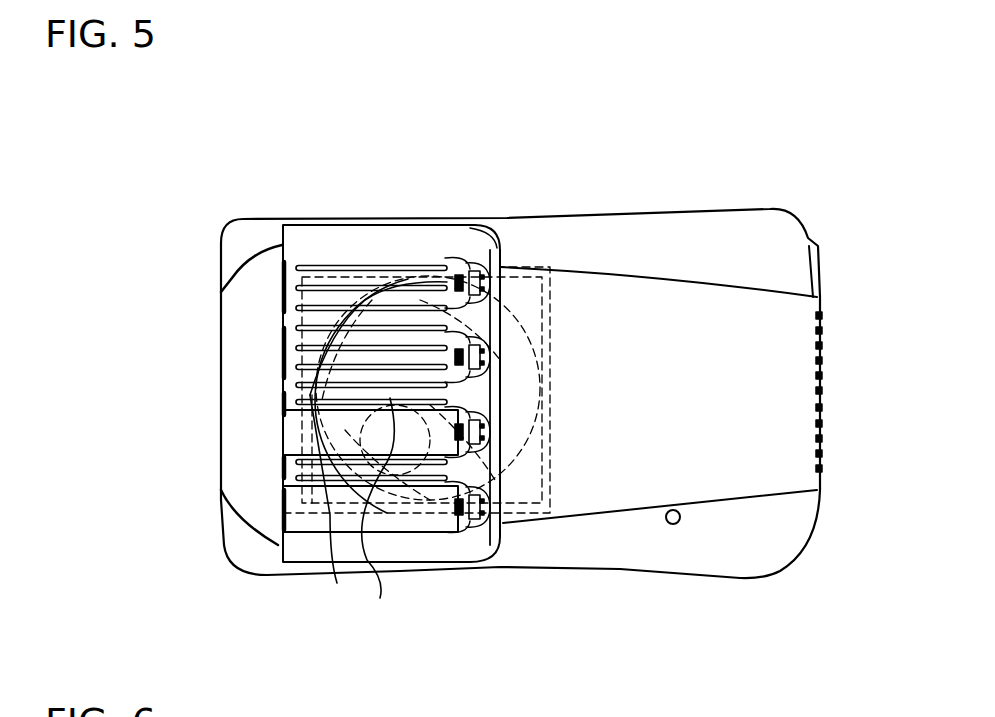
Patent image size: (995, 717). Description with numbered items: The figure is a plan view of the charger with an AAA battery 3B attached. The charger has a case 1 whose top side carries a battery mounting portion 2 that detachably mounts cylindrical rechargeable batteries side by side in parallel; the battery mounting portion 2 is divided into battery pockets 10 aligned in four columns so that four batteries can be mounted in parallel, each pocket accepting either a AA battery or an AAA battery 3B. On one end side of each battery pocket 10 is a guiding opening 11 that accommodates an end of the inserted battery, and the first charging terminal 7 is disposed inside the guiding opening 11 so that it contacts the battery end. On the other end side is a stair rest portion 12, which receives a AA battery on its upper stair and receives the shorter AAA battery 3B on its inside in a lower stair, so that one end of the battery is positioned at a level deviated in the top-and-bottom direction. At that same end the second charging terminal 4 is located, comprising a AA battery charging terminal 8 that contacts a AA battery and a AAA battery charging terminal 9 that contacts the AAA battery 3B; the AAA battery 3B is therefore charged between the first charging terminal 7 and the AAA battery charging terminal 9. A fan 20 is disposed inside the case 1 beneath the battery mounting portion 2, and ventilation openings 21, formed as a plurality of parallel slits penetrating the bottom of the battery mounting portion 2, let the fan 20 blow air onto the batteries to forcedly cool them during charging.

The case 1 is at (657, 327).
The battery mounting portion 2 is at (356, 253).
The AAA battery 3B is at (356, 512).
The second charging terminal 4 is at (515, 352).
The first charging terminal 7 is at (300, 224).
The AA battery charging terminal 8 is at (495, 268).
The AAA battery charging terminal 9 is at (480, 268).
The battery pocket 10 is at (304, 297).
The guiding opening 11 is at (283, 241).
The stair rest portion 12 is at (490, 478).
The fan 20 is at (410, 520).
The ventilation openings 21 is at (405, 303).